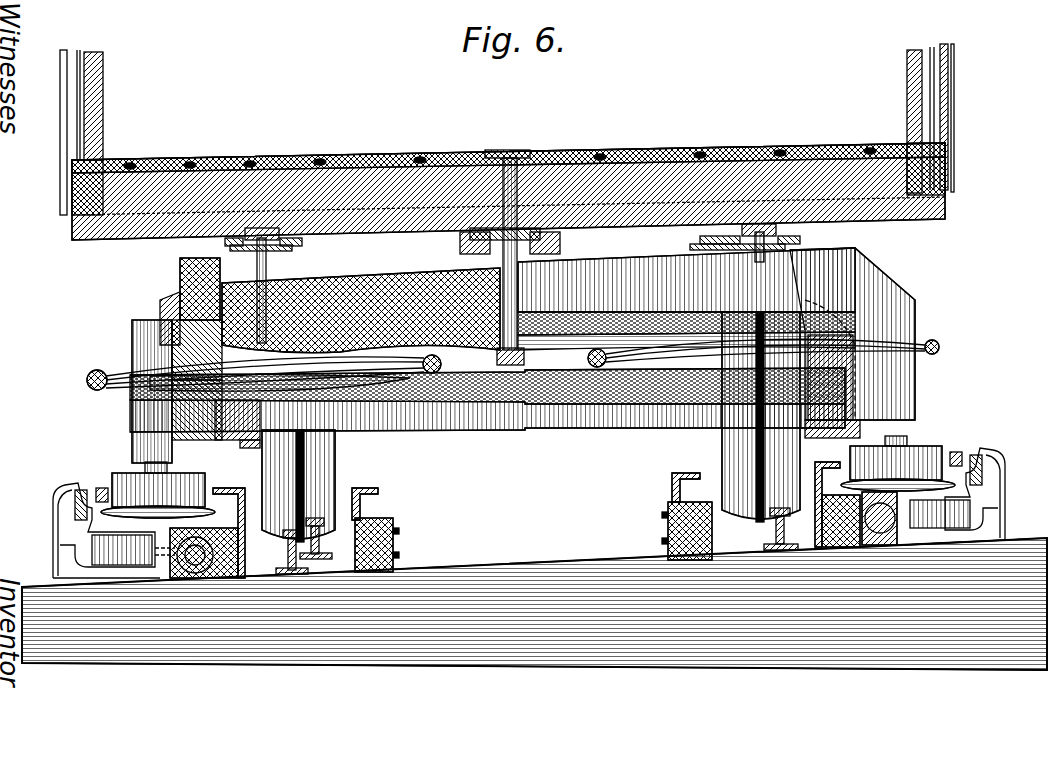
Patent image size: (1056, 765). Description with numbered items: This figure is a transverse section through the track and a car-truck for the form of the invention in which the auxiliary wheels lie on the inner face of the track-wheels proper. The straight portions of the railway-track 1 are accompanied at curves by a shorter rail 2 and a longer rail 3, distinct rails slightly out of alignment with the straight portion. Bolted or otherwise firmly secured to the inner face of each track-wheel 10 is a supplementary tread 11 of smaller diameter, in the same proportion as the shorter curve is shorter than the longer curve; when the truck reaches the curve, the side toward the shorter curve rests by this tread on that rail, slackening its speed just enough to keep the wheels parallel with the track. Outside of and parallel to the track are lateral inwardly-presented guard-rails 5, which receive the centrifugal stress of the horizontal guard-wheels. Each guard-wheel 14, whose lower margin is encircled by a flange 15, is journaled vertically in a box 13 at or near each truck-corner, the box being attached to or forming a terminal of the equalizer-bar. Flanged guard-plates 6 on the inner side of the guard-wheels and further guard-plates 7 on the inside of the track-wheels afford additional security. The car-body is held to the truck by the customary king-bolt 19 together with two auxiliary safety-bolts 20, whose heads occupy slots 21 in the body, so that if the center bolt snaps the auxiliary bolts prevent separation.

The straight portion of railway-track 1 is at (283, 540).
The shorter rail of curved portion 2 is at (320, 538).
The longer rail of curved portion 3 is at (785, 529).
The guard-rail 5 is at (529, 502).
The flanged guard-plate 6 is at (526, 508).
The guard-plate 7 is at (356, 490).
The track-wheel 10 is at (549, 489).
The supplementary tread 11 is at (330, 458).
The box 13 is at (517, 382).
The guard-wheel 14 is at (128, 476).
The flange 15 is at (528, 504).
The king-bolt 19 is at (545, 150).
The auxiliary safety-bolt 20 is at (283, 247).
The slot 21 is at (263, 235).